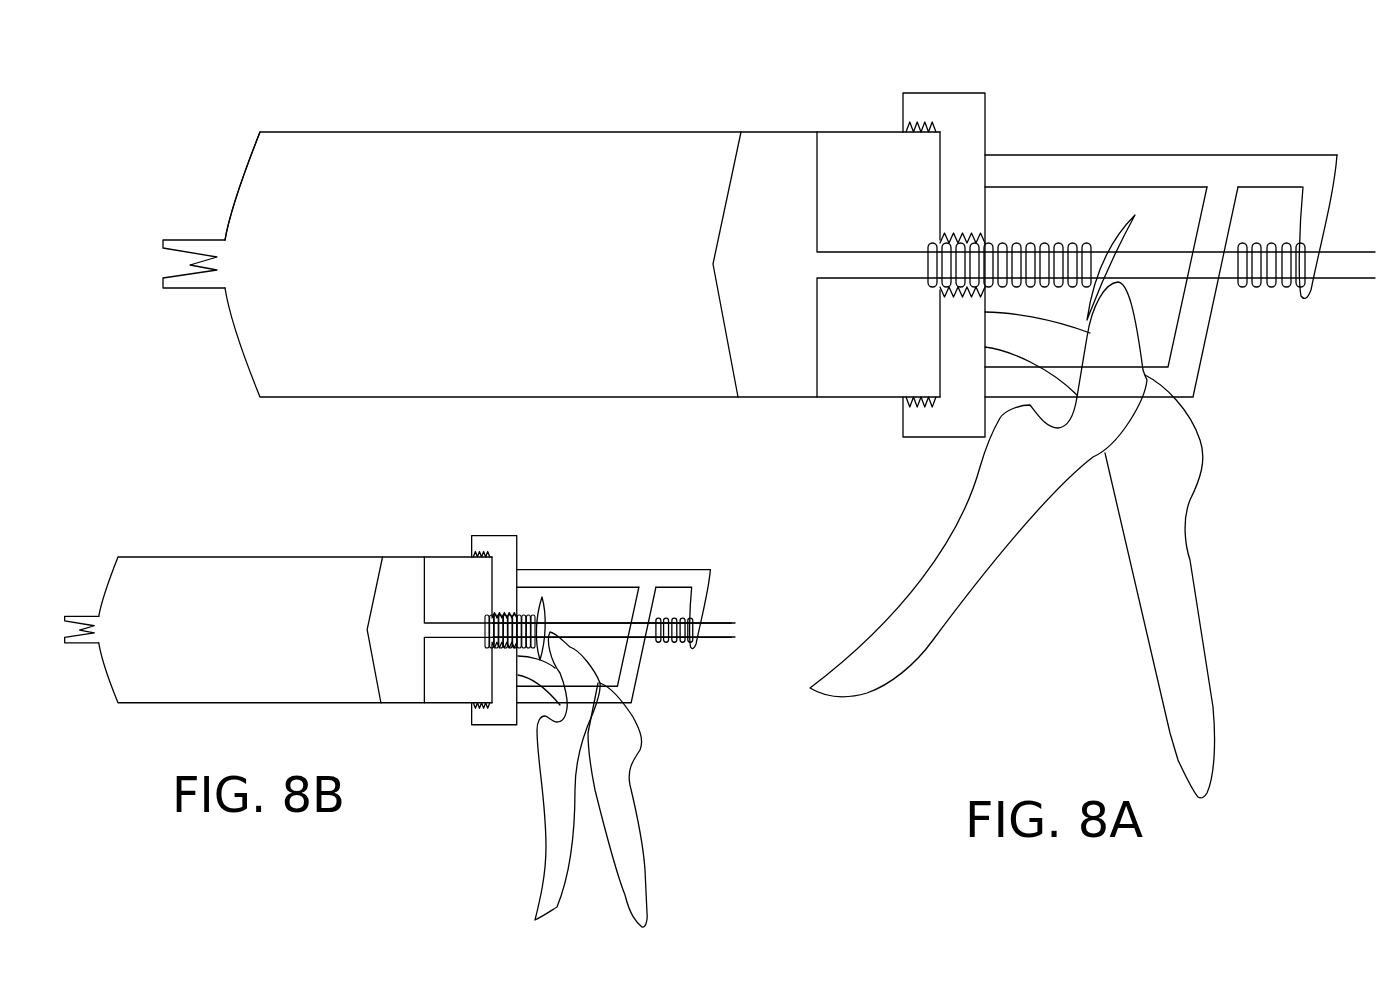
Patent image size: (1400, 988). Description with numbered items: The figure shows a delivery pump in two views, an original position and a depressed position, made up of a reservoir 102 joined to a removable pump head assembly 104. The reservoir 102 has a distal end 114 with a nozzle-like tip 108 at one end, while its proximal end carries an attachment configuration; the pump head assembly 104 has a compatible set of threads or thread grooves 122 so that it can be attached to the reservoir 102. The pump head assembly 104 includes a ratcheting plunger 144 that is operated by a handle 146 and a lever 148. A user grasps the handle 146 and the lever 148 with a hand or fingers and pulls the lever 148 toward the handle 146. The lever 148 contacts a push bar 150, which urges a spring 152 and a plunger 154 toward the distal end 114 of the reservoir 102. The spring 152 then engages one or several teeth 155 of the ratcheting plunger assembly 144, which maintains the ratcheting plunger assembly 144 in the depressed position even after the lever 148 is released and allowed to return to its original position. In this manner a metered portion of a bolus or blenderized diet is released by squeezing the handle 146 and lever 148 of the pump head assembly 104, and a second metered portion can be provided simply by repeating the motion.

In FIG. 8A, the reservoir 102 is at (502, 132).
In FIG. 8A, the distal end 114 is at (260, 132).
In FIG. 8A, the nozzle / dispensing tip 108 is at (157, 240).
In FIG. 8A, the threads or thread grooves 122 is at (913, 122).
In FIG. 8B, the threads or thread grooves 122 is at (480, 555).
In FIG. 8A, the teeth 155 is at (965, 230).
In FIG. 8B, the teeth 155 is at (503, 613).
In FIG. 8A, the pump head assembly 104 is at (1137, 92).
In FIG. 8B, the pump head assembly 104 is at (602, 520).
In FIG. 8A, the spring 152 is at (1027, 242).
In FIG. 8B, the spring 152 is at (522, 613).
In FIG. 8A, the push bar 150 is at (1107, 240).
In FIG. 8B, the push bar 150 is at (544, 606).
In FIG. 8A, the ratcheting plunger 144 is at (1252, 155).
In FIG. 8B, the ratcheting plunger 144 is at (682, 568).
In FIG. 8A, the plunger 154 is at (1157, 265).
In FIG. 8B, the plunger 154 is at (613, 632).
In FIG. 8A, the lever 148 is at (917, 613).
In FIG. 8B, the lever 148 is at (545, 825).
In FIG. 8A, the handle 146 is at (1178, 707).
In FIG. 8B, the handle 146 is at (627, 875).